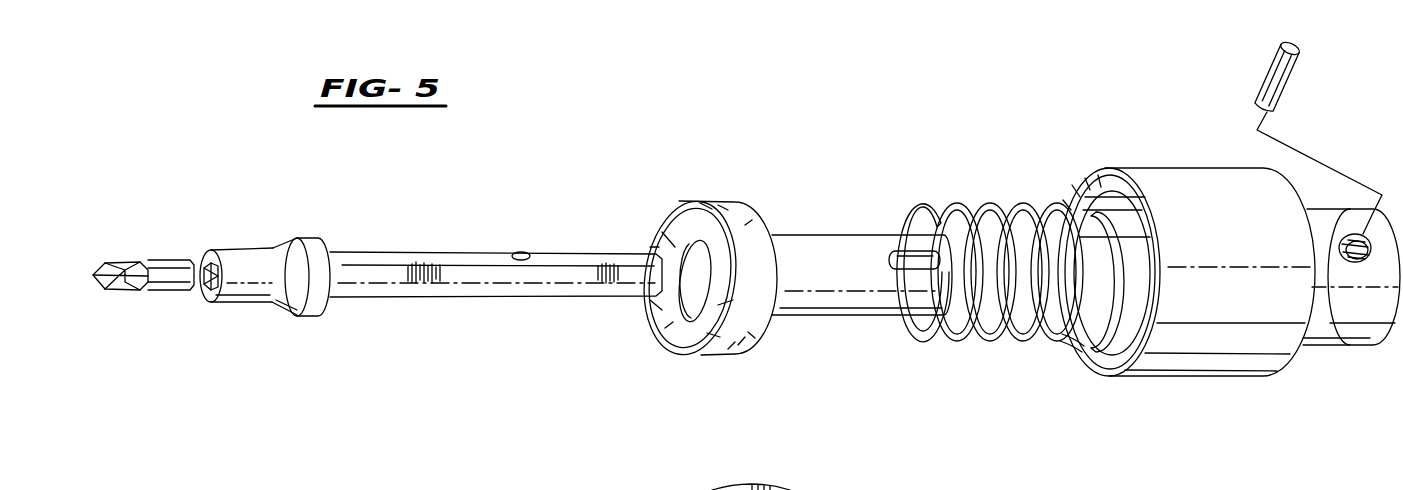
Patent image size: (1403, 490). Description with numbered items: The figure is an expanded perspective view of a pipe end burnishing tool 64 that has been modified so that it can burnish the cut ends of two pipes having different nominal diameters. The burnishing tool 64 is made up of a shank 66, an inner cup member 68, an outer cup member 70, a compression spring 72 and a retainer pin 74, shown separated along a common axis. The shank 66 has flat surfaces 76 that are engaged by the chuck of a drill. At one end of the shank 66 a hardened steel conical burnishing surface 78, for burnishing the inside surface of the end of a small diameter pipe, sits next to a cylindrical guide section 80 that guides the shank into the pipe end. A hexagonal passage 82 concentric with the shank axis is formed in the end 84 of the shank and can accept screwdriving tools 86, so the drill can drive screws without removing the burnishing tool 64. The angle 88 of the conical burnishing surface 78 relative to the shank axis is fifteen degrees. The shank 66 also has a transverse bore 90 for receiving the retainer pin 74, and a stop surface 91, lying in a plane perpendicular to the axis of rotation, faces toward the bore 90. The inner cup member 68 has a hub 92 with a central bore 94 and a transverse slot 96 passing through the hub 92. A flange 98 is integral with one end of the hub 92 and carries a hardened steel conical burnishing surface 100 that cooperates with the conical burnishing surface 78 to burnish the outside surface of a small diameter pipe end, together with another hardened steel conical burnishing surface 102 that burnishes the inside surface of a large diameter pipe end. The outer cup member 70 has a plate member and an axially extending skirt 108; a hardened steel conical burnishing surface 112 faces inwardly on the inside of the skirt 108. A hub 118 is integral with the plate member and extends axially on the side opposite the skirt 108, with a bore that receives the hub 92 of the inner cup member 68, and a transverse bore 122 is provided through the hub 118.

The burnishing tool 64 is at (692, 156).
The shank 66 is at (462, 238).
The inner cup member 68 is at (822, 210).
The outer cup member 70 is at (1152, 145).
The compression spring 72 is at (945, 223).
The retainer pin 74 is at (1273, 68).
The flat surfaces 76 is at (463, 285).
The conical burnishing surface 78 is at (302, 290).
The cylindrical guide section 80 is at (238, 308).
The hexagonal passage 82 is at (197, 287).
The end of the shank 84 is at (203, 258).
The screwdriving tools 86 is at (122, 258).
The angle 88 is at (318, 212).
The transverse bore 90 is at (522, 253).
The stop surface 91 is at (333, 305).
The hub 92 is at (858, 318).
The central bore 94 is at (686, 277).
The transverse slot 96 is at (903, 255).
The flange 98 is at (728, 352).
The conical burnishing surface 100 is at (670, 312).
The conical burnishing surface 102 is at (715, 318).
The skirt 108 is at (1167, 360).
The conical burnishing surface 112 is at (1080, 351).
The hub 118 is at (1354, 327).
The transverse bore 122 is at (1334, 262).